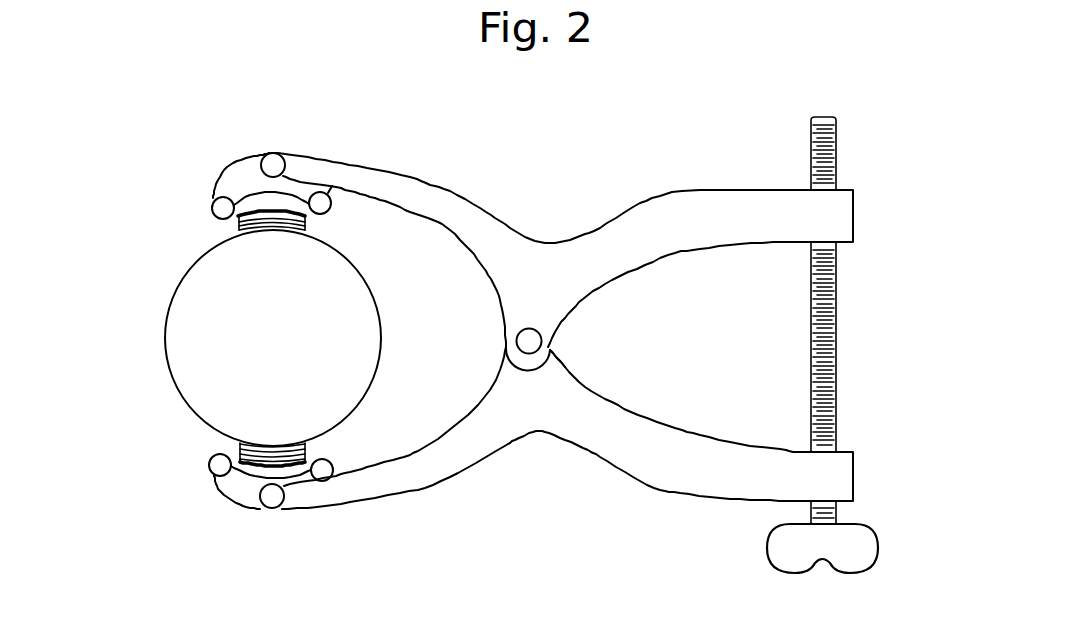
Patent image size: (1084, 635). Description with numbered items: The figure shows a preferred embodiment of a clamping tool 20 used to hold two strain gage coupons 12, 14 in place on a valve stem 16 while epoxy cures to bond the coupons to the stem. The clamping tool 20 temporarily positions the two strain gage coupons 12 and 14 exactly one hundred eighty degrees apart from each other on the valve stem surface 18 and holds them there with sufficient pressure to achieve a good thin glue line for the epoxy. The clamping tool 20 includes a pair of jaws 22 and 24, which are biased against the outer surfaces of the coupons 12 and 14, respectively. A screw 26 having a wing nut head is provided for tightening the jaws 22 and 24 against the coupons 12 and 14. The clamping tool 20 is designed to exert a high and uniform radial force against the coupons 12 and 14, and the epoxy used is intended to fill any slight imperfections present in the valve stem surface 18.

The strain gage coupon 12 is at (240, 226).
The strain gage coupon 14 is at (220, 450).
The valve stem 16 is at (173, 290).
The valve stem surface 18 is at (183, 400).
The clamping tool 20 is at (677, 485).
The jaw 22 is at (243, 175).
The jaw 24 is at (236, 490).
The screw 26 is at (835, 358).